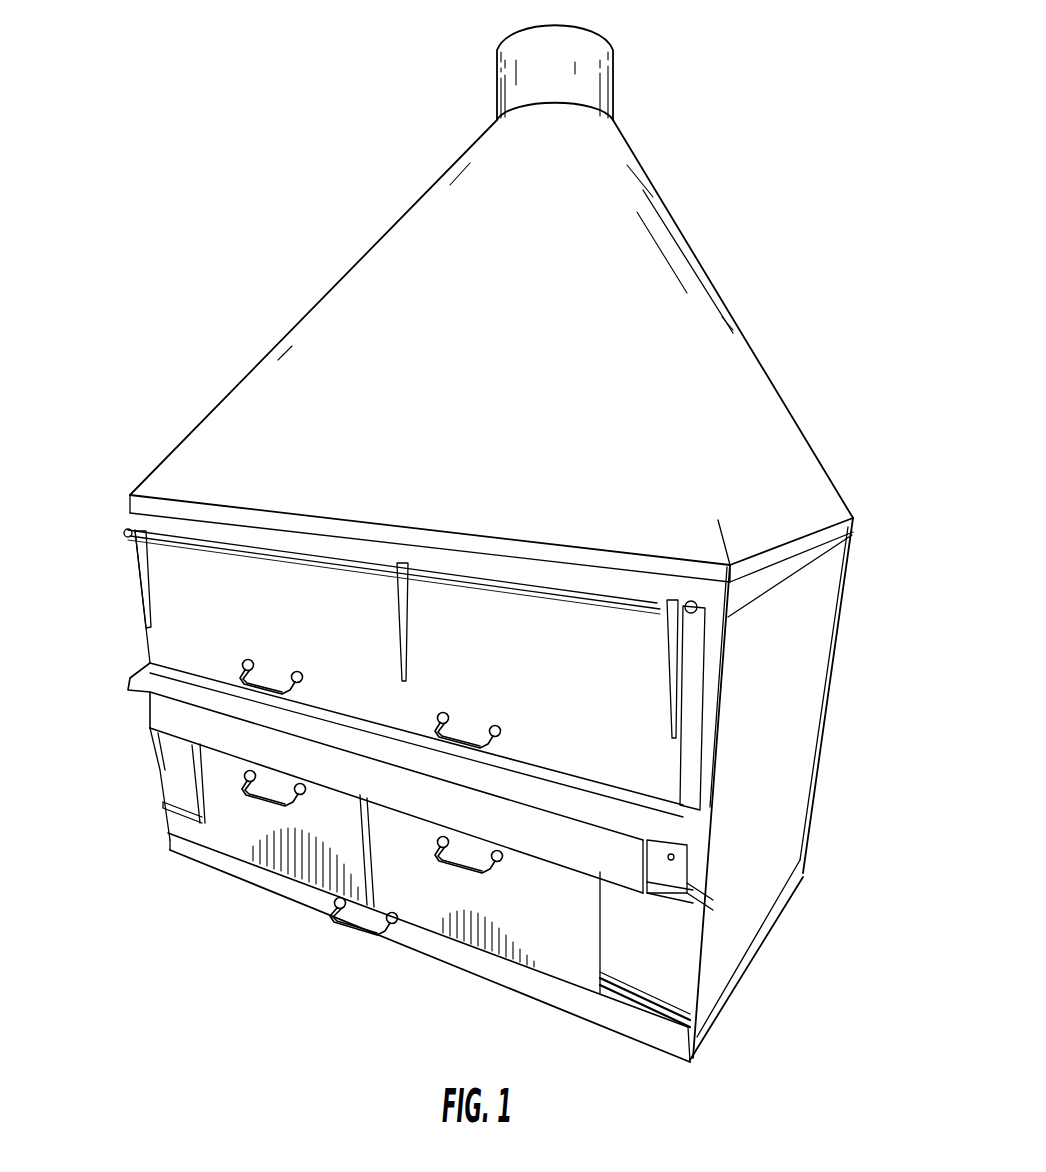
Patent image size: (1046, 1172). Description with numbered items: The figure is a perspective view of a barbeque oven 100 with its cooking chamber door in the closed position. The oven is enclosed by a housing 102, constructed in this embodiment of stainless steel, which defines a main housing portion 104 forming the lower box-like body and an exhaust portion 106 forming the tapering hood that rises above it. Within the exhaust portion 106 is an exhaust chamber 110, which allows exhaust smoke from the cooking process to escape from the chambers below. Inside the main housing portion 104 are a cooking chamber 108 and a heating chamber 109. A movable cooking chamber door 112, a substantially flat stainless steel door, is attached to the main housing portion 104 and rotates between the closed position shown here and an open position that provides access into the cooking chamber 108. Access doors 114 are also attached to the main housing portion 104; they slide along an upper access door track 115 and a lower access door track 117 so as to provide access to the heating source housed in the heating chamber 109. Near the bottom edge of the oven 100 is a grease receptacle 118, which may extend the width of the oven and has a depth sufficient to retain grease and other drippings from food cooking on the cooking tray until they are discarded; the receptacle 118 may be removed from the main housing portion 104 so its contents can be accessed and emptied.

The barbeque oven 100 is at (212, 256).
The housing 102 is at (108, 499).
The main housing portion 104 is at (798, 710).
The exhaust portion 106 is at (392, 292).
The cooking chamber 108 is at (815, 627).
The heating chamber 109 is at (753, 846).
The exhaust chamber 110 is at (705, 352).
The cooking chamber door 112 is at (207, 632).
The access doors 114 is at (247, 827).
The upper access door track 115 is at (690, 900).
The lower access door track 117 is at (630, 993).
The grease receptacle 118 is at (288, 873).